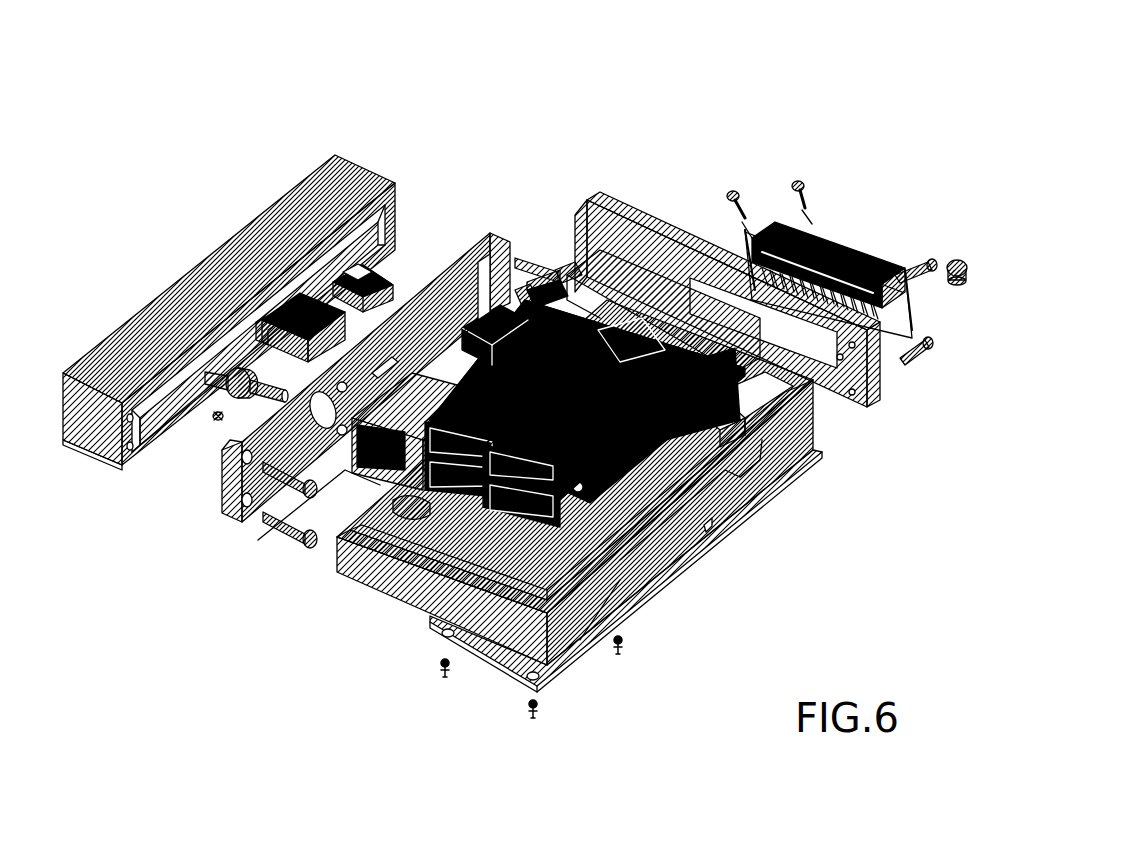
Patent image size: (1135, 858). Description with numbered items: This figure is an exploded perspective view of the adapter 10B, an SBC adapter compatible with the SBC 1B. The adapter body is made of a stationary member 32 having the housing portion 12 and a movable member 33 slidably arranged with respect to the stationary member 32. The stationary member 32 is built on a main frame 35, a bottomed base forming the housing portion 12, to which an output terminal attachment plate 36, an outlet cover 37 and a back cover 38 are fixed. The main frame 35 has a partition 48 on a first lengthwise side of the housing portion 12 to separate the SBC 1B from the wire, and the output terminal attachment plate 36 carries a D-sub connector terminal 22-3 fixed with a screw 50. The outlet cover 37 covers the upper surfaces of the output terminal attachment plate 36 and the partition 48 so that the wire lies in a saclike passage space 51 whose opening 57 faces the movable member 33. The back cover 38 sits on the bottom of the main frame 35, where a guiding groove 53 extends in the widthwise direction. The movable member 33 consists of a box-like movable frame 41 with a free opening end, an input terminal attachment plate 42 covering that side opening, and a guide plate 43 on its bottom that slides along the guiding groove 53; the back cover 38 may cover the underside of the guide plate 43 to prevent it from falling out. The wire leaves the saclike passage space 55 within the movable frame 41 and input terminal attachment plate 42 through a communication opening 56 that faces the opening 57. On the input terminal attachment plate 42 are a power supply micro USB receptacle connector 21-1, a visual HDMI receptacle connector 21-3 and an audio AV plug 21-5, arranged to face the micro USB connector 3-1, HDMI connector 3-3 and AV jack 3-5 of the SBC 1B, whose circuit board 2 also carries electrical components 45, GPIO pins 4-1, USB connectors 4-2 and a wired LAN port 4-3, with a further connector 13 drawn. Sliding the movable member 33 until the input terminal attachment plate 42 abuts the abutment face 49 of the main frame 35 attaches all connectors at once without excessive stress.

The adapter 10B is at (492, 118).
The SBC 1B is at (620, 580).
The circuit board 2 is at (762, 380).
The power supply micro USB connector 3-1 is at (553, 262).
The audiovisual HDMI connector 3-3 is at (495, 330).
The audiovisual AV jack 3-5 is at (440, 380).
The GPIO pins 4-1 is at (738, 425).
The USB connector 4-2 is at (378, 472).
The wired LAN port 4-3 is at (268, 520).
The housing portion 12 is at (415, 550).
The connector 13 is at (528, 600).
The power supply micro USB receptacle connector 21-1 is at (358, 290).
The visual HDMI receptacle connector 21-3 is at (282, 320).
The audio AV plug 21-5 is at (238, 382).
The D-sub connector terminal 22-3 is at (852, 248).
The stationary member 32 is at (812, 490).
The movable member 33 is at (448, 200).
The main frame 35 is at (760, 432).
The output terminal attachment plate 36 is at (606, 212).
The outlet cover 37 is at (650, 255).
The back cover 38 is at (582, 668).
The movable frame 41 is at (302, 182).
The input terminal attachment plate 42 is at (222, 500).
The guide plate 43 is at (215, 418).
The electrical components 45 is at (642, 348).
The partition 48 is at (772, 412).
The abutment face 49 is at (345, 527).
The screw 50 is at (958, 280).
The passage space 51 is at (745, 375).
The guiding groove 53 is at (710, 525).
The passage space 55 is at (122, 462).
The communication opening 56 is at (505, 318).
The opening 57 is at (575, 235).